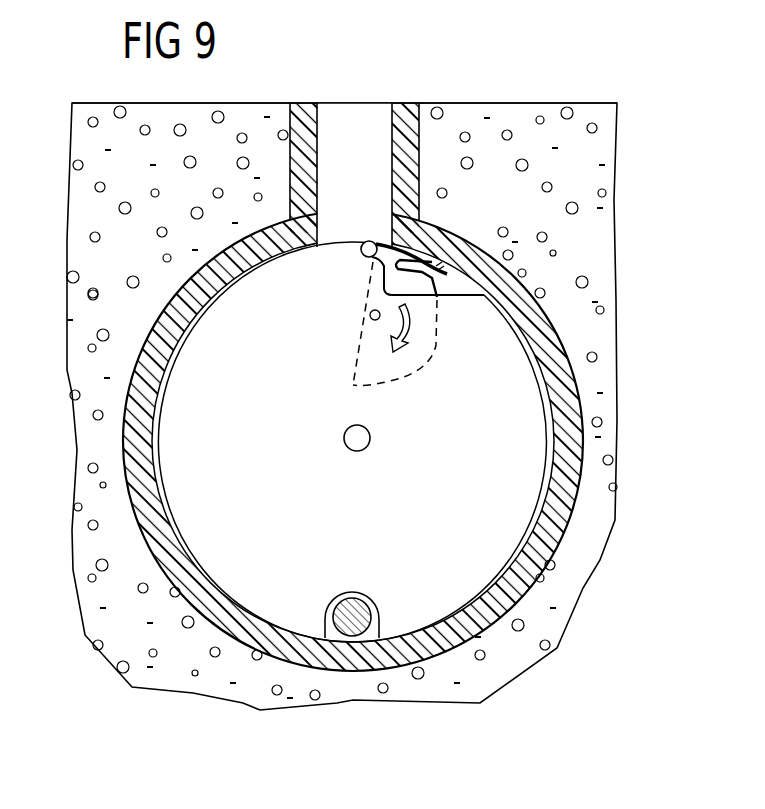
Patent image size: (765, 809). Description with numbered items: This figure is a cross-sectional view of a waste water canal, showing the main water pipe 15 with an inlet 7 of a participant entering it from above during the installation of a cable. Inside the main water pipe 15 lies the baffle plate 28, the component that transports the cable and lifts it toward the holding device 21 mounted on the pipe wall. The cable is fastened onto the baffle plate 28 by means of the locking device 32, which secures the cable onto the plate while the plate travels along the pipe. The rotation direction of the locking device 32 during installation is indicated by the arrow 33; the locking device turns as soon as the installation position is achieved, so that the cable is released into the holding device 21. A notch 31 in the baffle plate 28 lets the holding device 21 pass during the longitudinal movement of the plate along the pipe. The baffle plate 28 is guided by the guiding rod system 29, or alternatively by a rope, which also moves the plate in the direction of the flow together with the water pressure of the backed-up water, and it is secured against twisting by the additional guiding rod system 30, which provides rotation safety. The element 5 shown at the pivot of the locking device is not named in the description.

The hinge ball 5 is at (366, 256).
The inlet 7 is at (349, 124).
The main water pipe 15 is at (493, 590).
The holding device 21 is at (441, 262).
The baffle plate 28 is at (485, 469).
The guiding rod system 29 is at (350, 442).
The guiding rod system 30 is at (352, 605).
The notch 31 is at (452, 284).
The locking device 32 is at (357, 355).
The rotation direction of the locking device 33 is at (417, 337).